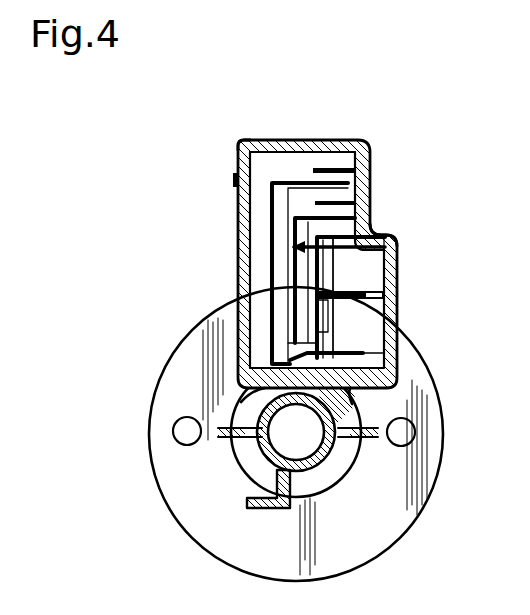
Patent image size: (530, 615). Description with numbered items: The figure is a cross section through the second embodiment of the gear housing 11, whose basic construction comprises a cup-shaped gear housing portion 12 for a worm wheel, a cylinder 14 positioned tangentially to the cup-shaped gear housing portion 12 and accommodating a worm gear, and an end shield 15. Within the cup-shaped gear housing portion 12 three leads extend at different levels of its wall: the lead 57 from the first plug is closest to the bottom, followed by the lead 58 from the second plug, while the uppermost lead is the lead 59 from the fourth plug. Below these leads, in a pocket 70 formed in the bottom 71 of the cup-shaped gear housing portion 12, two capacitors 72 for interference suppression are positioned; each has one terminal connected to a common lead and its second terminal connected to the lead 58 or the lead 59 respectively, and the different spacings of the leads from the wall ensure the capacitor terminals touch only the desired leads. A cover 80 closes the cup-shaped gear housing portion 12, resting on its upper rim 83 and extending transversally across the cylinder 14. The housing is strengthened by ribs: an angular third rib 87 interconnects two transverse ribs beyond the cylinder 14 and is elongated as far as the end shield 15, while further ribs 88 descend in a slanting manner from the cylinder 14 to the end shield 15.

The gear housing 11 is at (378, 181).
The cup-shaped gear housing portion 12 is at (300, 163).
The cylinder 14 is at (270, 457).
The end shield 15 is at (346, 534).
The lead 57 is at (322, 290).
The lead 58 is at (300, 261).
The lead 59 is at (277, 230).
The pocket 70 is at (392, 236).
The bottom 71 is at (356, 220).
The capacitors 72 is at (368, 275).
The cover 80 is at (236, 193).
The upper rim 83 is at (244, 140).
The third rib 87 is at (276, 510).
The ribs 88 is at (231, 432).